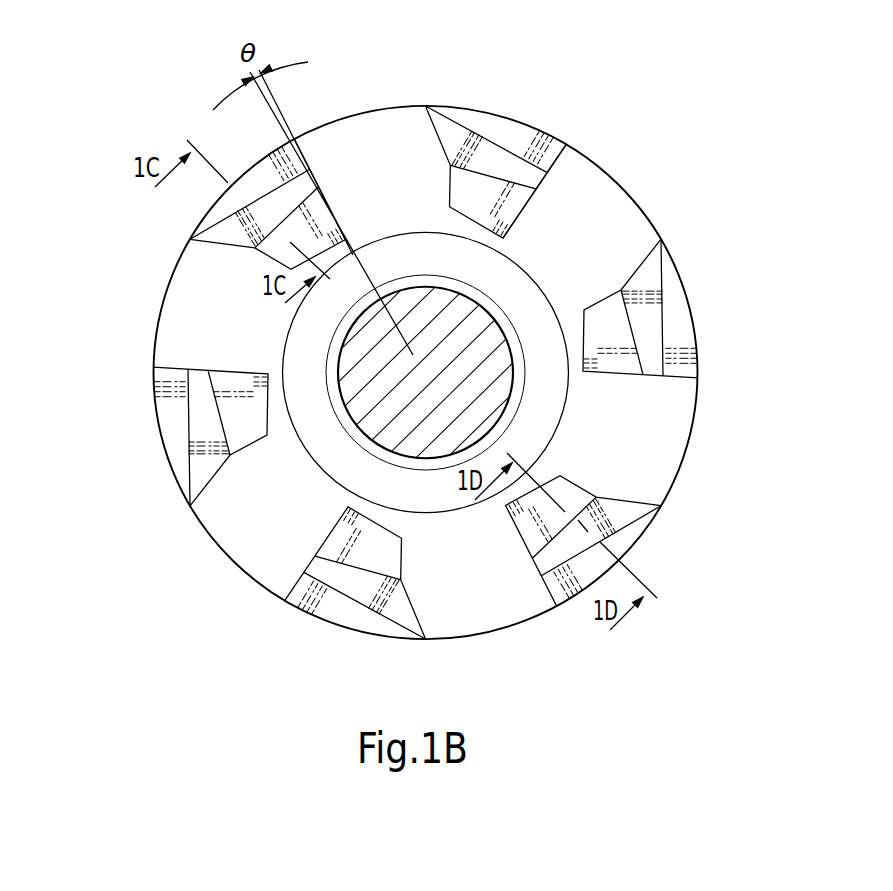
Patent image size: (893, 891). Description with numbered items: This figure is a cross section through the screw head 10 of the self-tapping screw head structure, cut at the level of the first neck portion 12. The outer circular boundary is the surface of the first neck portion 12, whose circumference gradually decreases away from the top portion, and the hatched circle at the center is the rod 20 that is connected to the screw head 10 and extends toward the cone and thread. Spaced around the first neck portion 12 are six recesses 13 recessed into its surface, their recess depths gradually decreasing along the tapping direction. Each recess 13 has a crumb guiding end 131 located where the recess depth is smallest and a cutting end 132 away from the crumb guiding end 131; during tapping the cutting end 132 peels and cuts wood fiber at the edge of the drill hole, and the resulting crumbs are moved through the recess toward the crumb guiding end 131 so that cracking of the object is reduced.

The screw head 10 is at (527, 124).
The first neck portion 12 is at (625, 230).
The recess 13 is at (218, 248).
The crumb guiding end 131 is at (447, 168).
The cutting end 132 is at (540, 188).
The rod 20 is at (333, 422).